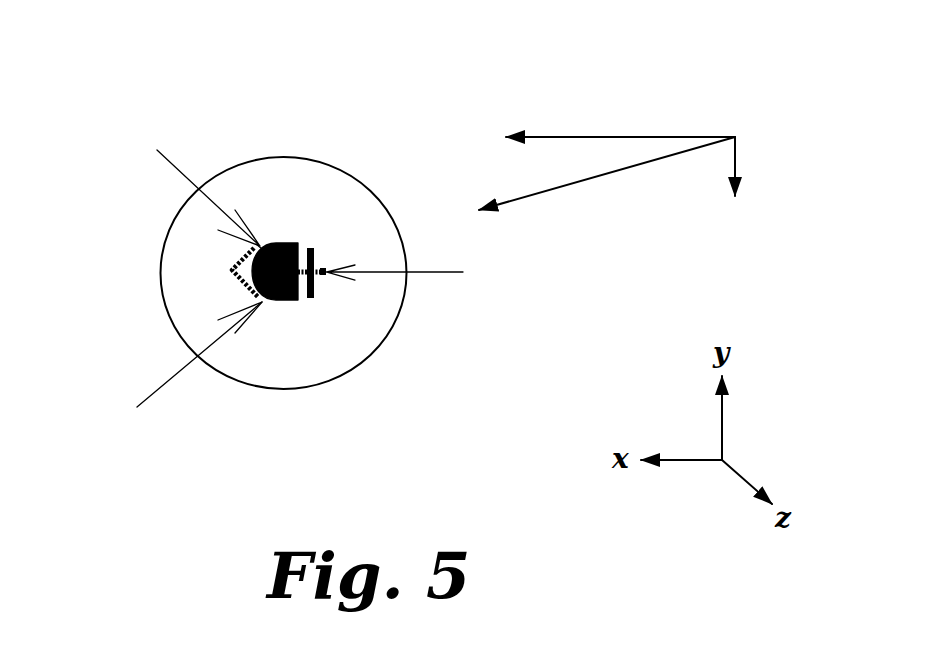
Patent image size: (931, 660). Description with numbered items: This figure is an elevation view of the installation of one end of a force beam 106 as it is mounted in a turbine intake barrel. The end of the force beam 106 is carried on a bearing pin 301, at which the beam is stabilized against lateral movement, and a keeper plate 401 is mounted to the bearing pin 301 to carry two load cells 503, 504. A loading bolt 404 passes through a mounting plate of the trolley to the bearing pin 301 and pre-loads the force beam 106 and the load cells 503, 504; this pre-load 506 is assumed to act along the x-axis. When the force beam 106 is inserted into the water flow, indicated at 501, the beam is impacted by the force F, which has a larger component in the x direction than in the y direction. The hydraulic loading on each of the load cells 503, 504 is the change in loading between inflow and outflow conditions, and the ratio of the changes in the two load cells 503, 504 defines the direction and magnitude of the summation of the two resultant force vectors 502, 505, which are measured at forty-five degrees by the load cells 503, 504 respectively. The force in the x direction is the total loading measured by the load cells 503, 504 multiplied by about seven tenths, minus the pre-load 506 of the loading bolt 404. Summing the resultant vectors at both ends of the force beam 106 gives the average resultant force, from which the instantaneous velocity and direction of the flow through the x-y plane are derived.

The force beam 106 is at (348, 171).
The bearing pin 301 is at (287, 242).
The keeper plate 401 is at (232, 266).
The loading bolt 404 is at (325, 282).
The water flow 501 is at (596, 114).
The resultant force vector 502 is at (173, 161).
The load cell 503 is at (275, 310).
The load cell 504 is at (263, 242).
The resultant force vector 505 is at (170, 372).
The pre-load 506 is at (367, 280).